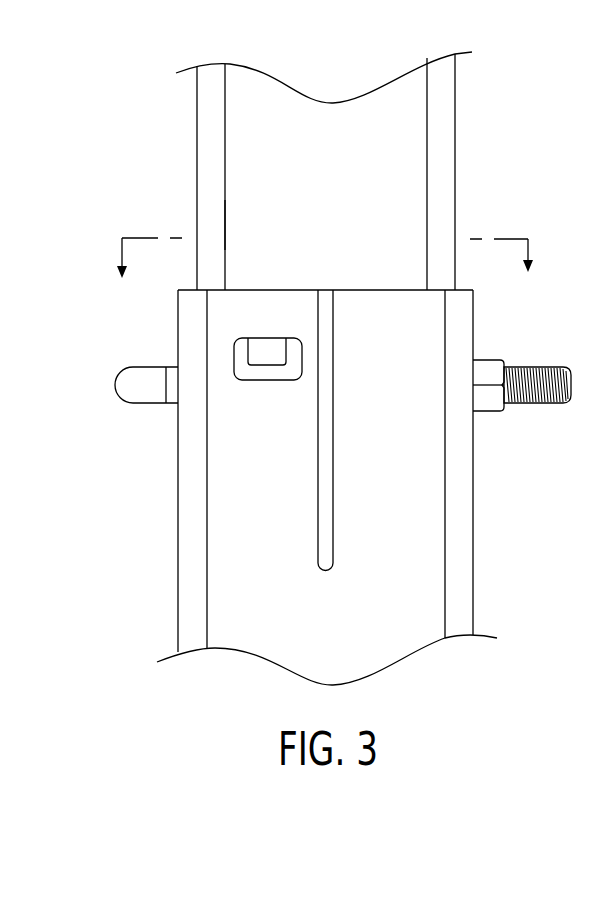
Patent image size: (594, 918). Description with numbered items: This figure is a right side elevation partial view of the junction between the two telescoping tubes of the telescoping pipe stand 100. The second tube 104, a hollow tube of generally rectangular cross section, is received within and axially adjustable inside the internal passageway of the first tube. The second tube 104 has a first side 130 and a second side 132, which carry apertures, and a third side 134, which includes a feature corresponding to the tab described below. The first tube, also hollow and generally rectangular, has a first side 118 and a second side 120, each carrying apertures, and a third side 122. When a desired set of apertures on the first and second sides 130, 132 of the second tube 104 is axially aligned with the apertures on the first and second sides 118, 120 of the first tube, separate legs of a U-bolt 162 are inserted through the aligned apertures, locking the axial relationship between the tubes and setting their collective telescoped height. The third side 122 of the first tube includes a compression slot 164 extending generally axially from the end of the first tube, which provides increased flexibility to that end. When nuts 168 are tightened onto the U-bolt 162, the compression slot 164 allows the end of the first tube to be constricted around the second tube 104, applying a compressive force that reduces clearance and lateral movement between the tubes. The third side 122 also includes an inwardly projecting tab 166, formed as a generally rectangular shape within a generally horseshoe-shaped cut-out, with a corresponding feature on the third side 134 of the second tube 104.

The telescoping pipe stand 100 is at (492, 86).
The second tube 104 is at (189, 141).
The first side of second tube 130 is at (196, 183).
The second side of second tube 132 is at (456, 182).
The third side of second tube 134 is at (242, 218).
The first side of first tube 118 is at (178, 545).
The second side of first tube 120 is at (473, 462).
The third side of first tube 122 is at (423, 548).
The U-bolt 162 is at (128, 384).
The compression slot 164 is at (318, 425).
The inwardly projecting tab 166 is at (264, 344).
The nut 168 is at (490, 368).